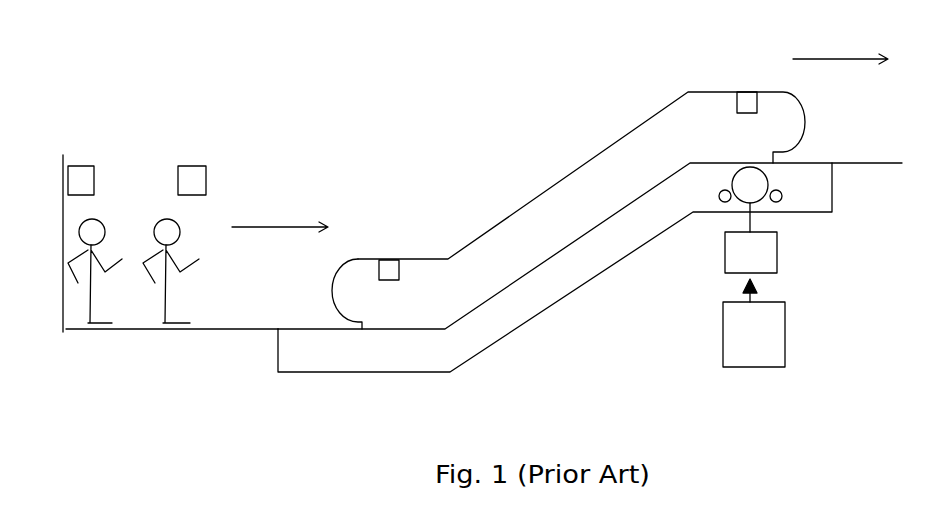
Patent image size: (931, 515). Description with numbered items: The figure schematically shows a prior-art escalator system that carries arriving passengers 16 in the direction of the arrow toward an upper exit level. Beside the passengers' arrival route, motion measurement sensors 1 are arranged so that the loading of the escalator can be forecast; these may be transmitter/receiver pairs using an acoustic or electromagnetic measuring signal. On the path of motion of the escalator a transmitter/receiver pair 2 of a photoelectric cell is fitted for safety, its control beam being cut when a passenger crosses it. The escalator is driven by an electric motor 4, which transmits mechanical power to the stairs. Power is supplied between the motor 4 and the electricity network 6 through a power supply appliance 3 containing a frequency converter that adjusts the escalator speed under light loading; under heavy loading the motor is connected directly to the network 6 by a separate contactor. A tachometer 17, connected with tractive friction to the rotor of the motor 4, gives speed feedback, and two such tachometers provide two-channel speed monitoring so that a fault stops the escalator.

The motion measurement sensors 1 is at (80, 165).
The transmitter/receiver pair of the photoelectric cell 2 is at (388, 258).
The power supply appliance 3 is at (722, 252).
The electric motor 4 is at (765, 176).
The electricity network 6 is at (787, 333).
The arriving passengers 16 is at (148, 314).
The tachometer 17 is at (718, 203).